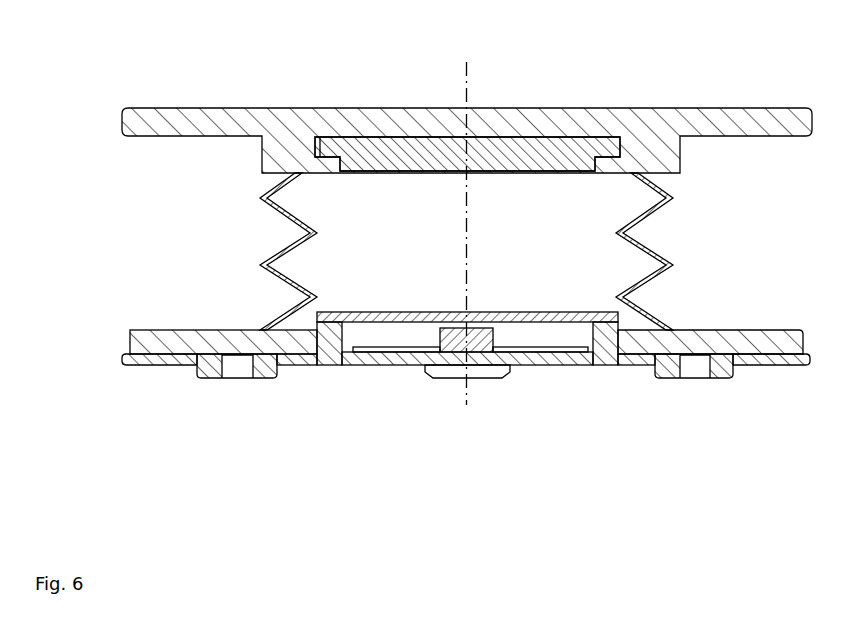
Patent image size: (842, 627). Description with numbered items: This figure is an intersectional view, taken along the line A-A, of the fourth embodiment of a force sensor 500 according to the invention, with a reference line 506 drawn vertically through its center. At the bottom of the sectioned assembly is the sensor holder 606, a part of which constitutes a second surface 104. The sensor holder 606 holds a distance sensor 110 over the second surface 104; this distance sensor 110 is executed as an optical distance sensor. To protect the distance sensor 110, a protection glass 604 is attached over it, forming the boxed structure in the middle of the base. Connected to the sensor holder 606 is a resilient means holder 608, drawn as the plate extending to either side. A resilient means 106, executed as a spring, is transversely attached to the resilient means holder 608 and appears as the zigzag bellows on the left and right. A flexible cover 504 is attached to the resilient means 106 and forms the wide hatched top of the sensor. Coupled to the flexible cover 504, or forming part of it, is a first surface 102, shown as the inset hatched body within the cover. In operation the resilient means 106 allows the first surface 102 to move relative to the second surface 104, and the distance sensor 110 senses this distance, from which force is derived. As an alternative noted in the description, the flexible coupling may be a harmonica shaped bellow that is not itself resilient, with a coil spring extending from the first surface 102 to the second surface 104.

The force sensor 500 is at (769, 46).
The flexible cover 504 is at (190, 120).
The first surface 102 is at (548, 150).
The reference line 506 is at (468, 66).
The resilient means 106 is at (282, 218).
The protection glass 604 is at (337, 318).
The resilient means holder 608 is at (733, 340).
The sensor holder 606 is at (121, 366).
The second surface 104 is at (376, 353).
The distance sensor 110 is at (485, 331).